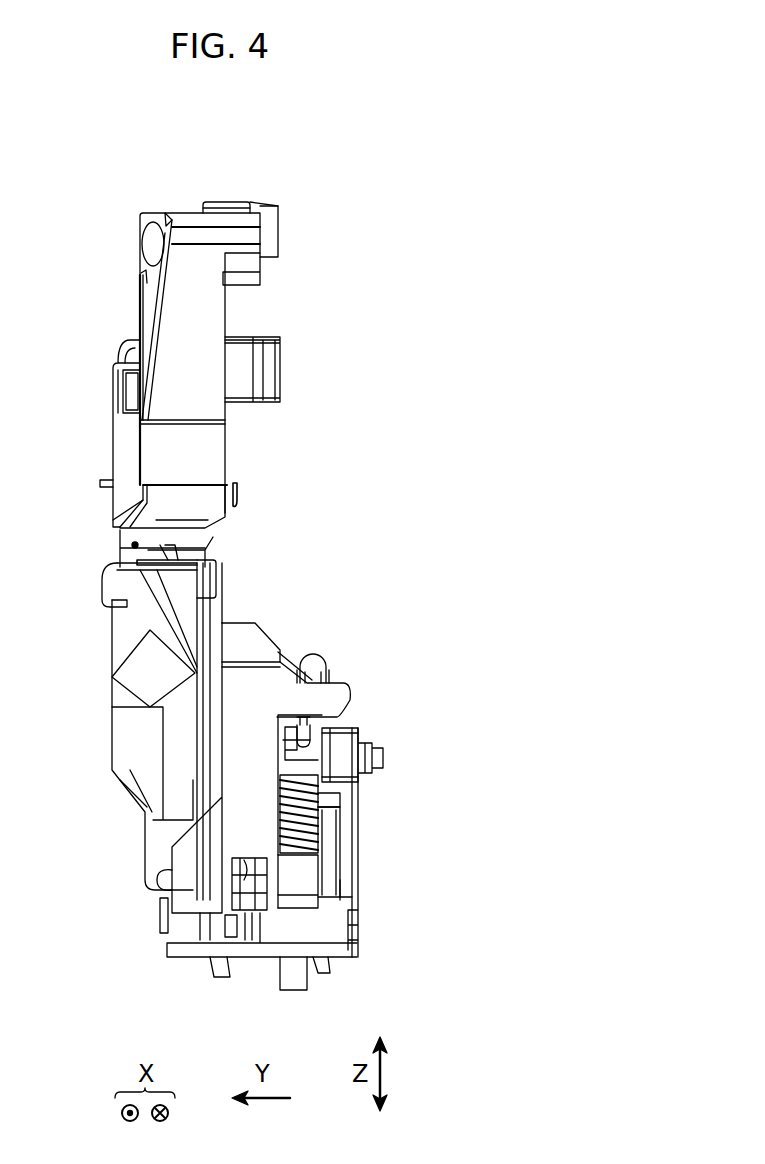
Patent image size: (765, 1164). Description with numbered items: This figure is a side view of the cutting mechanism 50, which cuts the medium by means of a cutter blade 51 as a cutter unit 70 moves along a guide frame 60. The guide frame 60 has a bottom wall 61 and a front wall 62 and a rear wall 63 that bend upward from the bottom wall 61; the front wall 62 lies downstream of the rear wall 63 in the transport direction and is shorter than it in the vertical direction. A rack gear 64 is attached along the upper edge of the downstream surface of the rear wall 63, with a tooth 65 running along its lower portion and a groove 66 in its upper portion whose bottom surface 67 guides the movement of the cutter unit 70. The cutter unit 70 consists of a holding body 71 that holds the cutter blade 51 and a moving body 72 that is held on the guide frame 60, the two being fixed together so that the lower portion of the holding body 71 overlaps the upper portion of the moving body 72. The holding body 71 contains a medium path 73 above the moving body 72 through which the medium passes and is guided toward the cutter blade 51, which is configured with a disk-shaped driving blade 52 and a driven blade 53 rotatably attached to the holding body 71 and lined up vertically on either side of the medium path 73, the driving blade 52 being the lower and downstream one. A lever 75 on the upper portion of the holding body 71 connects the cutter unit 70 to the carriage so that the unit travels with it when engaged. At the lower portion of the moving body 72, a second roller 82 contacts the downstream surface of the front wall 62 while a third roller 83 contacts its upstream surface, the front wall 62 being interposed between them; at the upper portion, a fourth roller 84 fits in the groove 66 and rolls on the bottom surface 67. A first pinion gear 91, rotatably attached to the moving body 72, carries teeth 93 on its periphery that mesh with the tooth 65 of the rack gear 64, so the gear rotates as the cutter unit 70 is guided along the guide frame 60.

The cutting mechanism 50 is at (386, 147).
The cutter blade 51 is at (186, 521).
The driving blade 52 is at (148, 565).
The driven blade 53 is at (150, 555).
The guide frame 60 is at (367, 969).
The bottom wall 61 is at (342, 958).
The front wall 62 is at (228, 912).
The rear wall 63 is at (360, 900).
The rack gear 64 is at (283, 743).
The tooth 65 is at (283, 788).
The groove 66 is at (307, 727).
The bottom surface 67 is at (317, 737).
The cutter unit 70 is at (152, 193).
The holding body 71 is at (118, 345).
The moving body 72 is at (350, 700).
The medium path 73 is at (132, 545).
The lever 75 is at (280, 227).
The second roller 82 is at (155, 892).
The third roller 83 is at (248, 863).
The fourth roller 84 is at (313, 657).
The first pinion gear 91 is at (338, 803).
The teeth 93 is at (313, 843).